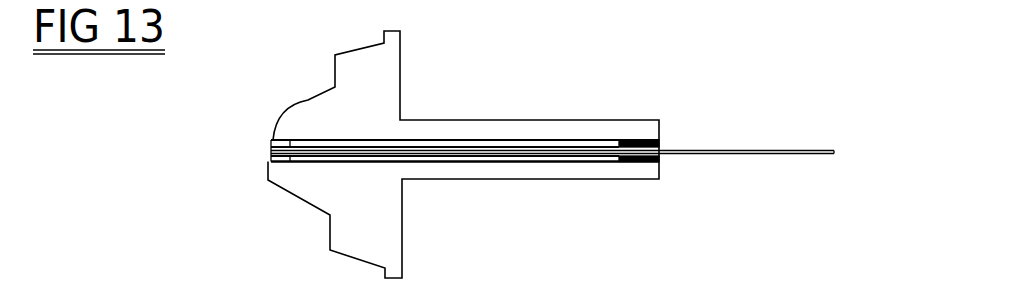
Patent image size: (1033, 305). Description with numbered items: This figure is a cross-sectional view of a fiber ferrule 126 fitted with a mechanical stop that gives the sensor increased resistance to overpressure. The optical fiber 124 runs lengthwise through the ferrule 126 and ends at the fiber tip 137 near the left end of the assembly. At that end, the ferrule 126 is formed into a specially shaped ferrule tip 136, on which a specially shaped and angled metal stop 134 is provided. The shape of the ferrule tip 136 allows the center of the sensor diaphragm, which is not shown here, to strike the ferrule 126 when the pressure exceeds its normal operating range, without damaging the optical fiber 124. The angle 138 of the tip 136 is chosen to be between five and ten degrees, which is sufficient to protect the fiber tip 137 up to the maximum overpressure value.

The optical fiber 124 is at (778, 154).
The fiber ferrule 126 is at (607, 178).
The metal stop 134 is at (267, 174).
The tip of the fiber ferrule 136 is at (203, 124).
The tip of the optical fiber 137 is at (272, 146).
The angle of the tip 138 is at (273, 140).